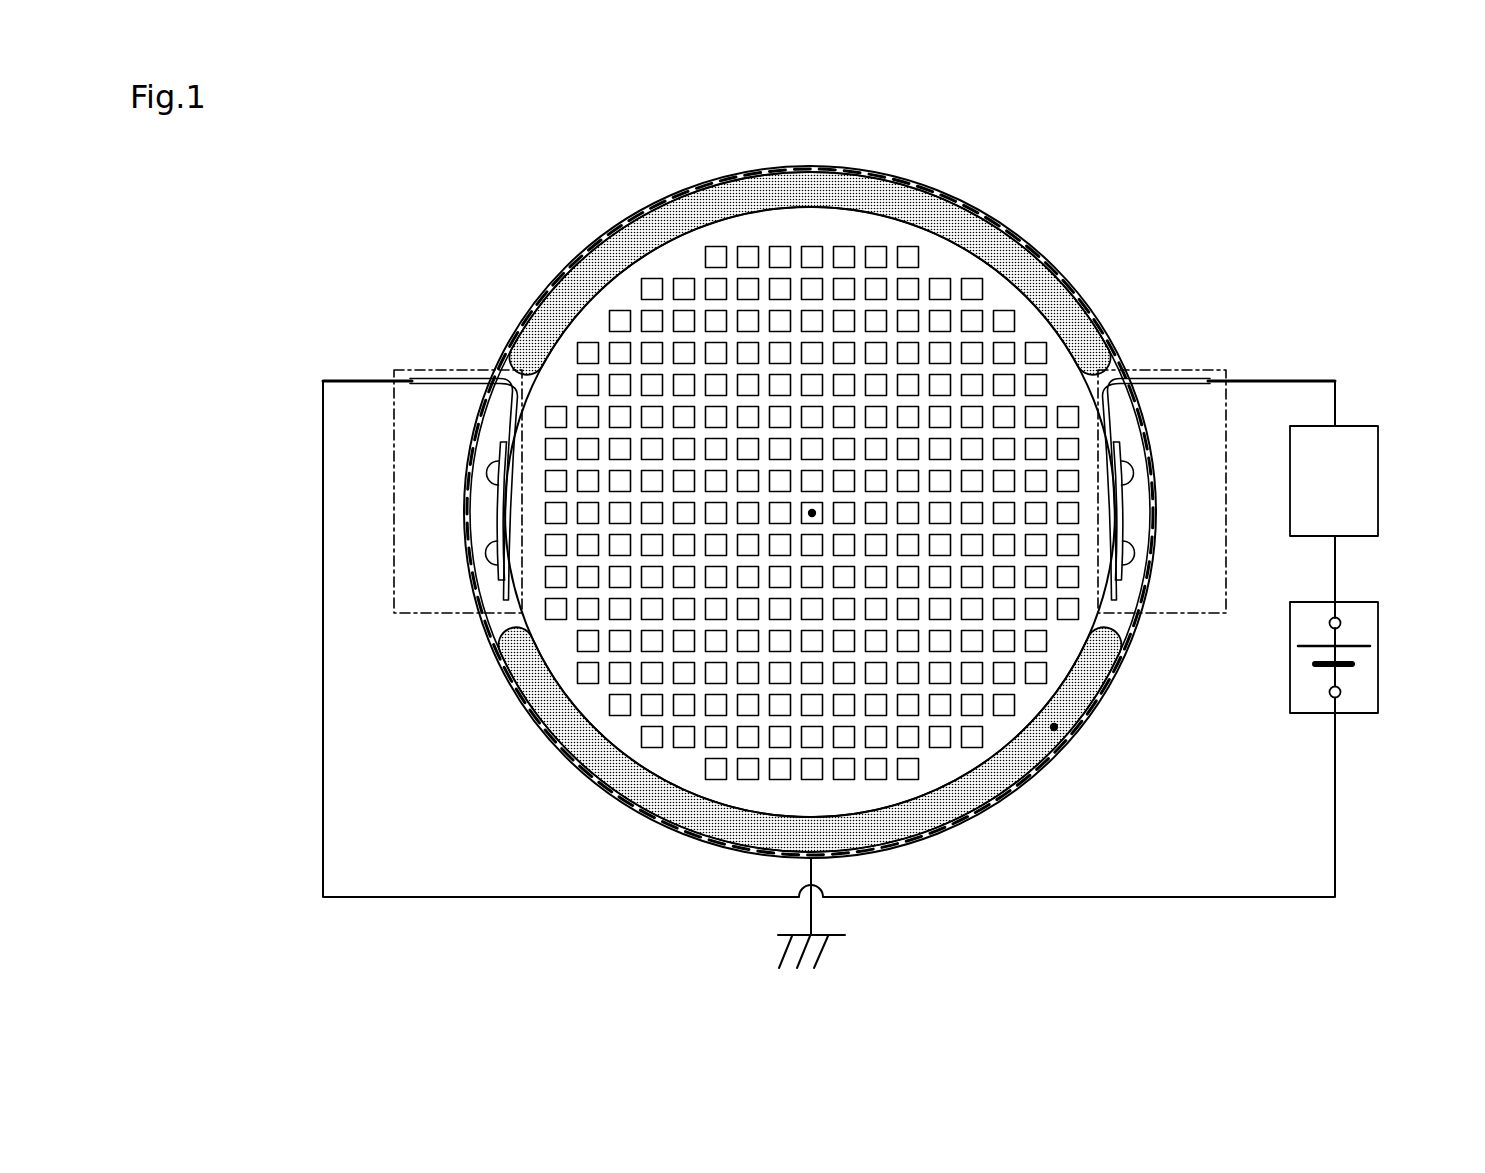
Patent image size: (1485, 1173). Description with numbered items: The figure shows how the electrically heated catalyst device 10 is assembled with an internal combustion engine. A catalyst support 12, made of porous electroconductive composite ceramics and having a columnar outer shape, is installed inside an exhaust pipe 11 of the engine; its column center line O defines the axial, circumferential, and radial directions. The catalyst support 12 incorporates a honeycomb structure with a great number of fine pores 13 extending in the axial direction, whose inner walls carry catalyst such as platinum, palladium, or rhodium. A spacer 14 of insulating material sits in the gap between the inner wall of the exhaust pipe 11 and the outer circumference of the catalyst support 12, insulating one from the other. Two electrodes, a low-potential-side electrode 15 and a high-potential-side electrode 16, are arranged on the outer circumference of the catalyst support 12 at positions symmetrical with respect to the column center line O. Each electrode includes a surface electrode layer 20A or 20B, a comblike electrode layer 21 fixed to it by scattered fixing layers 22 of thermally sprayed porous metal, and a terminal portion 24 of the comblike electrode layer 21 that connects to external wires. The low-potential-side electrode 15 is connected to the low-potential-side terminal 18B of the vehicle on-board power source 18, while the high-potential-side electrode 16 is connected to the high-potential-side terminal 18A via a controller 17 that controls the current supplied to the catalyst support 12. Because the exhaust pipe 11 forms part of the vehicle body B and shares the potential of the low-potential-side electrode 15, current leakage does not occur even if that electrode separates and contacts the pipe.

The electrically heated catalyst device 10 is at (592, 292).
The exhaust pipe 11 is at (979, 213).
The catalyst support 12 is at (680, 771).
The fine pores 13 is at (937, 748).
The spacer 14 is at (1056, 729).
The low-potential-side electrode 15 is at (450, 615).
The high-potential-side electrode 16 is at (1172, 615).
The controller 17 is at (1378, 481).
The vehicle on-board power source 18 is at (1378, 659).
The high-potential-side terminal 18A is at (1329, 622).
The low-potential-side terminal 18B is at (1329, 691).
The surface electrode layer 20A is at (499, 502).
The surface electrode layer 20B is at (1121, 502).
The comblike electrode layer 21 is at (501, 526).
The fixing layers 22 is at (492, 473).
The terminal portion 24 is at (452, 376).
The column center line O is at (814, 515).
The vehicle body B is at (836, 931).